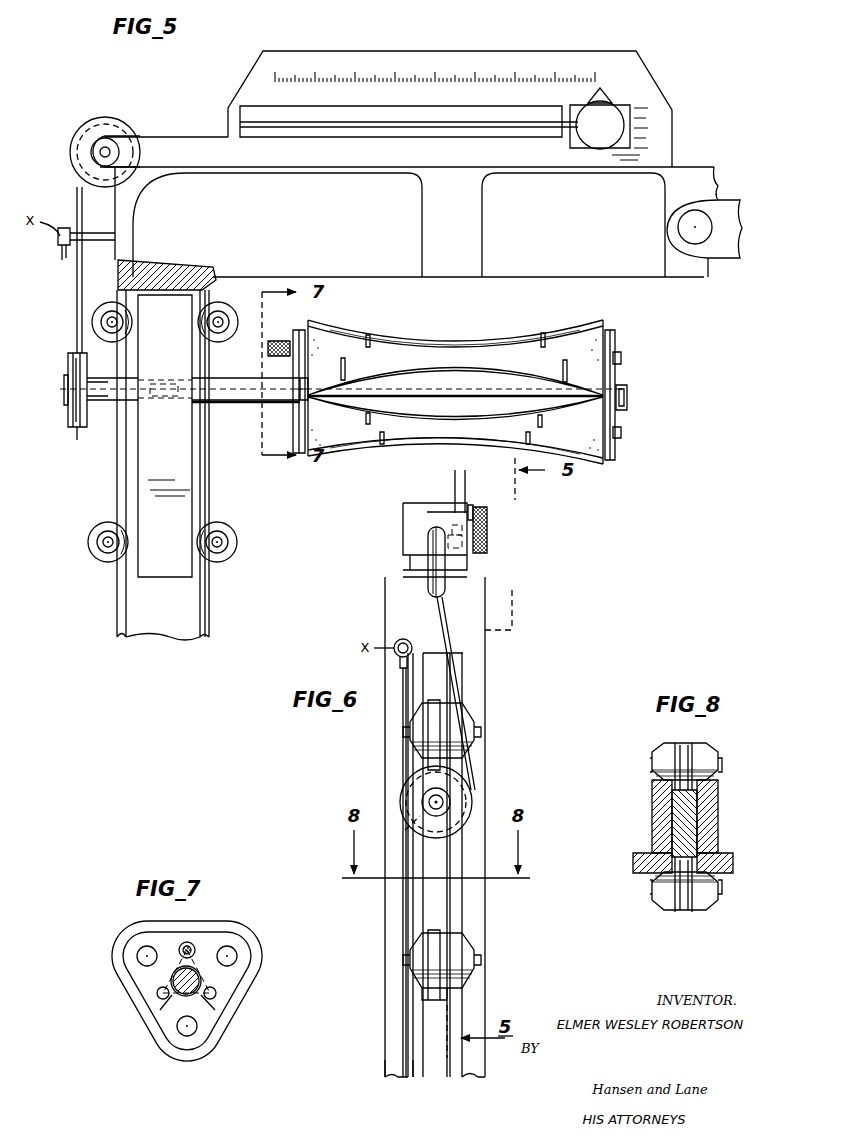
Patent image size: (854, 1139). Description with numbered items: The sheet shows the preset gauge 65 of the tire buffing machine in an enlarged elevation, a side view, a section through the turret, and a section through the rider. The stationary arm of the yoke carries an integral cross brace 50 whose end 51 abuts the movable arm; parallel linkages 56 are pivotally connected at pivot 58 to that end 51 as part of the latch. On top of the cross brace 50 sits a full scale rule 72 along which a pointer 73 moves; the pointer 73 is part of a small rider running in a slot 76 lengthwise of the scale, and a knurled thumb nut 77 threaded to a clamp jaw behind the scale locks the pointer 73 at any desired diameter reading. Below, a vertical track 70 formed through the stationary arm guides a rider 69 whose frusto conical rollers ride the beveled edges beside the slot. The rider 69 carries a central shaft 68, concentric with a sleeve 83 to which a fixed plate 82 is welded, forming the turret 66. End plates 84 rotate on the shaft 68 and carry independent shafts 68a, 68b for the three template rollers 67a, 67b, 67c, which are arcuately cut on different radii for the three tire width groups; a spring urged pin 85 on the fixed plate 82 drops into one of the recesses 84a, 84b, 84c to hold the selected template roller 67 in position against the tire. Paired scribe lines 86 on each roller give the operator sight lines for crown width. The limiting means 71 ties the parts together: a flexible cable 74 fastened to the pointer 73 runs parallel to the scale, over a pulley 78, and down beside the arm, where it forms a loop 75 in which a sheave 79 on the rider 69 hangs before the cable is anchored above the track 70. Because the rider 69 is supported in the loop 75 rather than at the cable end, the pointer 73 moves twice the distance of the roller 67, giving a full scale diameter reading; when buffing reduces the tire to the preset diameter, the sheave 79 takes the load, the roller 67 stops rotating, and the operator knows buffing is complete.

In FIG. 5, the cross brace 50 is at (346, 226).
In FIG. 6, the cross brace 50 is at (392, 590).
In FIG. 5, the end of cross brace 51 is at (688, 175).
In FIG. 5, the parallel linkages 56 is at (722, 252).
In FIG. 5, the pivot connection 58 is at (688, 230).
In FIG. 5, the preset gauge 65 is at (462, 52).
In FIG. 6, the preset gauge 65 is at (455, 480).
In FIG. 5, the turret 66 is at (632, 404).
In FIG. 5, the template roller 67 is at (421, 340).
In FIG. 7, the template roller 67 is at (160, 920).
In FIG. 5, the template roller 67a is at (400, 444).
In FIG. 7, the template roller 67a is at (186, 1053).
In FIG. 5, the template roller 67b is at (480, 342).
In FIG. 7, the template roller 67b is at (261, 960).
In FIG. 7, the template roller 67c is at (113, 952).
In FIG. 5, the central shaft 68 is at (508, 395).
In FIG. 7, the central shaft 68 is at (174, 988).
In FIG. 5, the roller shaft 68a is at (622, 433).
In FIG. 5, the roller shaft 68b is at (622, 357).
In FIG. 5, the rider 69 is at (156, 443).
In FIG. 6, the rider 69 is at (430, 903).
In FIG. 8, the rider 69 is at (692, 816).
In FIG. 5, the track 70 is at (122, 596).
In FIG. 6, the track 70 is at (447, 918).
In FIG. 8, the track 70 is at (697, 844).
In FIG. 6, the limiting means 71 is at (488, 522).
In FIG. 5, the full scale rule 72 is at (413, 103).
In FIG. 5, the pointer 73 is at (606, 96).
In FIG. 6, the pointer 73 is at (472, 505).
In FIG. 5, the flexible cable 74 is at (201, 122).
In FIG. 6, the flexible cable 74 is at (440, 624).
In FIG. 5, the loop 75 is at (79, 430).
In FIG. 6, the loop 75 is at (405, 830).
In FIG. 5, the slot 76 is at (494, 115).
In FIG. 5, the knurled thumb nut 77 is at (591, 133).
In FIG. 6, the knurled thumb nut 77 is at (484, 530).
In FIG. 5, the pulley 78 is at (103, 117).
In FIG. 6, the pulley 78 is at (447, 558).
In FIG. 5, the sheave 79 is at (68, 360).
In FIG. 6, the sheave 79 is at (400, 794).
In FIG. 5, the fixed plate 82 is at (300, 430).
In FIG. 7, the fixed plate 82 is at (226, 1005).
In FIG. 5, the sleeve 83 is at (244, 406).
In FIG. 5, the end plate 84 is at (298, 452).
In FIG. 7, the recess 84a is at (196, 952).
In FIG. 7, the recess 84b is at (158, 1003).
In FIG. 7, the recess 84c is at (232, 998).
In FIG. 5, the spring urged pin 85 is at (268, 349).
In FIG. 7, the spring urged pin 85 is at (190, 942).
In FIG. 5, the scribe line 86 is at (344, 372).